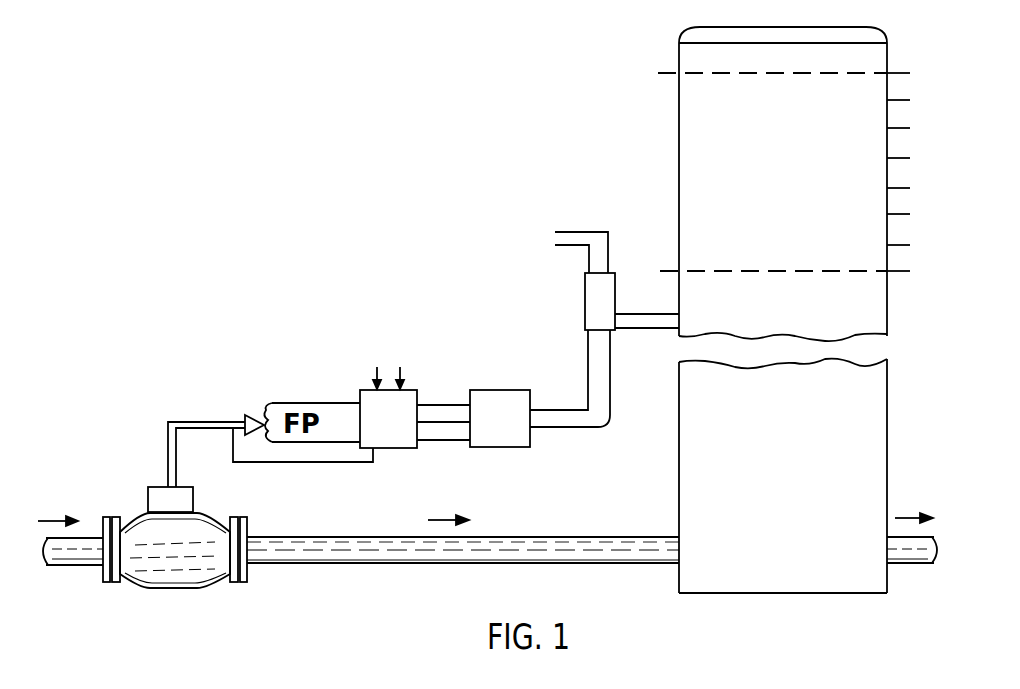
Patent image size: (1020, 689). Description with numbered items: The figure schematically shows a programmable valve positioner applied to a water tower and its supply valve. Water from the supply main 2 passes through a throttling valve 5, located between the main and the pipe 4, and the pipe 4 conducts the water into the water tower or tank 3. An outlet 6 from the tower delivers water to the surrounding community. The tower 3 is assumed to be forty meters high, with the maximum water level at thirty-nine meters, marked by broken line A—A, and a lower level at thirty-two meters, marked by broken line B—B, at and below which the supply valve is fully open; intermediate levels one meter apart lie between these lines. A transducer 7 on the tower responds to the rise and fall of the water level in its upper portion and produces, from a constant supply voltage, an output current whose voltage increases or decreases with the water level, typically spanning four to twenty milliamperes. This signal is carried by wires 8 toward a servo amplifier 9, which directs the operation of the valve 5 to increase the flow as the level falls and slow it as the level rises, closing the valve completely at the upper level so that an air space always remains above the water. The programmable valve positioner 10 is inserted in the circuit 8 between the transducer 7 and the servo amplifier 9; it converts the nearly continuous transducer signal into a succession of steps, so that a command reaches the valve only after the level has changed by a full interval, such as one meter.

The water supply main 2 is at (70, 566).
The water tower 3 is at (887, 455).
The pipe 4 is at (356, 563).
The valve 5 is at (172, 589).
The outlet 6 is at (913, 565).
The transducer 7 is at (585, 300).
The wires 8 is at (565, 411).
The servo amplifier 9 is at (390, 448).
The programmable valve positioner 10 is at (500, 448).